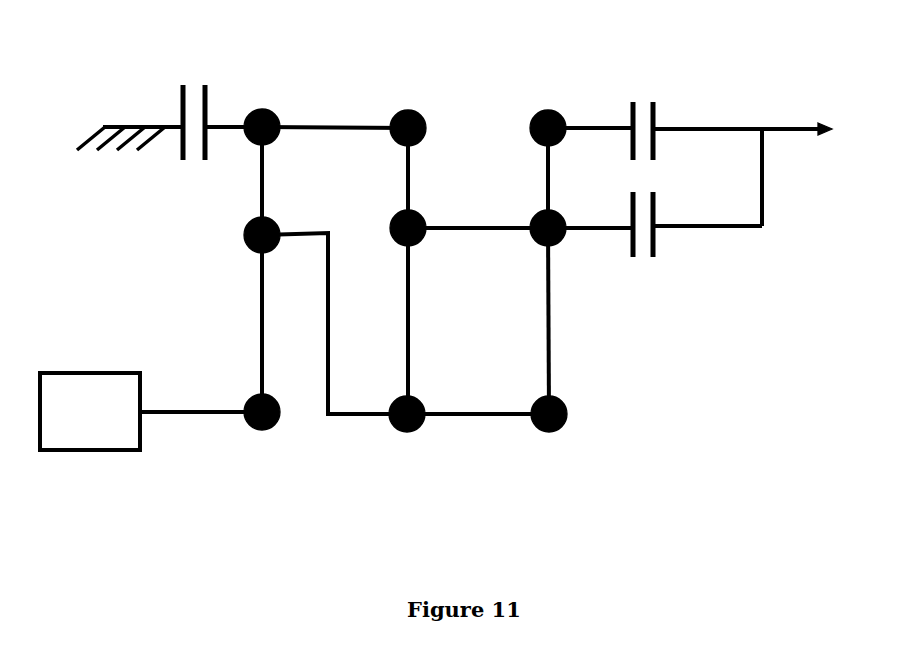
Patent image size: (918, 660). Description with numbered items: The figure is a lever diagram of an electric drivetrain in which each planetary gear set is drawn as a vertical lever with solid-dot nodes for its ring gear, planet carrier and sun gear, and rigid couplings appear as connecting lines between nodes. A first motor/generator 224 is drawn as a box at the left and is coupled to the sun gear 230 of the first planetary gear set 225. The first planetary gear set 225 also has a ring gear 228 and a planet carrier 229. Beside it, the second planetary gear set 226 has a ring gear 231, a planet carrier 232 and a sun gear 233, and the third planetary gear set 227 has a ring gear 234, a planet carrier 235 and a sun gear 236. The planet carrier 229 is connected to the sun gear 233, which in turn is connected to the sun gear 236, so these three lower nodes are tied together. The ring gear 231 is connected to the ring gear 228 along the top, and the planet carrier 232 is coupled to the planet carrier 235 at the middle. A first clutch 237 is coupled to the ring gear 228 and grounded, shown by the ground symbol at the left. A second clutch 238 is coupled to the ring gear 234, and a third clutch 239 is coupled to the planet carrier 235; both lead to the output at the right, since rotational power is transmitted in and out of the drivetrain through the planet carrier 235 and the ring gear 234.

The first motor/generator 224 is at (90, 411).
The first planetary gear set 225 is at (260, 357).
The second planetary gear set 226 is at (398, 358).
The third planetary gear set 227 is at (547, 358).
The ring gear 228 is at (268, 108).
The planet carrier 229 is at (246, 241).
The sun gear 230 is at (243, 400).
The ring gear 231 is at (408, 110).
The planet carrier 232 is at (448, 302).
The sun gear 233 is at (393, 428).
The ring gear 234 is at (550, 112).
The planet carrier 235 is at (553, 245).
The sun gear 236 is at (567, 418).
The first clutch 237 is at (169, 144).
The second clutch 238 is at (690, 142).
The third clutch 239 is at (655, 249).